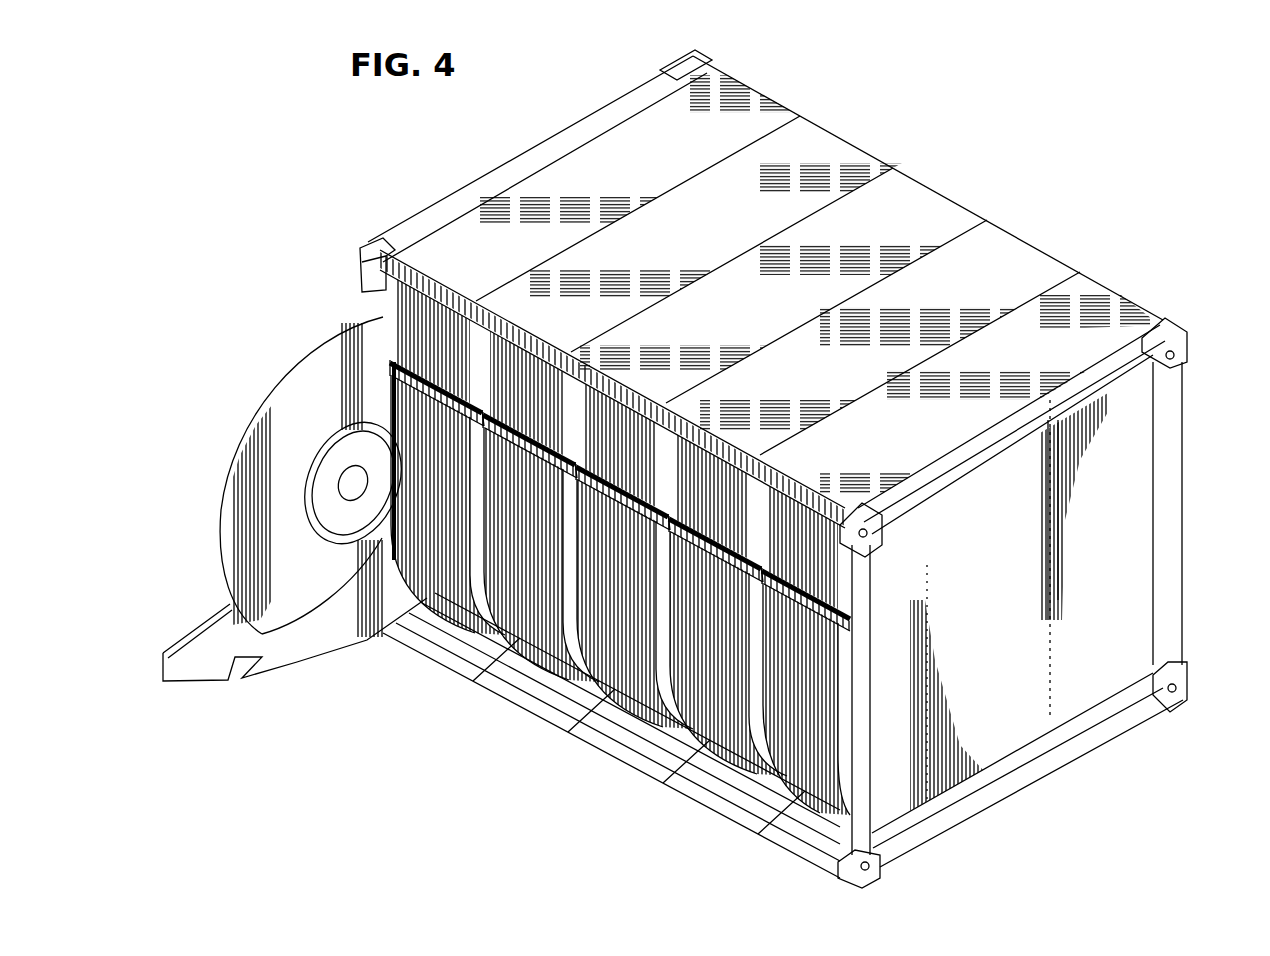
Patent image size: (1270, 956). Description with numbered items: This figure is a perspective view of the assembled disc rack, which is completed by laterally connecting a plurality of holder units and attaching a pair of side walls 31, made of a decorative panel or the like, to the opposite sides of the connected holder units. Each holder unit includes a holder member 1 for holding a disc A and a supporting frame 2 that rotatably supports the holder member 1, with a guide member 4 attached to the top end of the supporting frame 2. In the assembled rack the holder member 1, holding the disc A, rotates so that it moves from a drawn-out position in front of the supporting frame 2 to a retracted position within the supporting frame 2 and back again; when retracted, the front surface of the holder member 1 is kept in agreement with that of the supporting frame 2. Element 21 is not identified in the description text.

The holder member 1 is at (313, 648).
The supporting frame 2 is at (1029, 242).
The guide member 4 is at (410, 262).
The bottom support rails 21 is at (503, 688).
The side walls 31 is at (487, 177).
The disc A is at (245, 487).